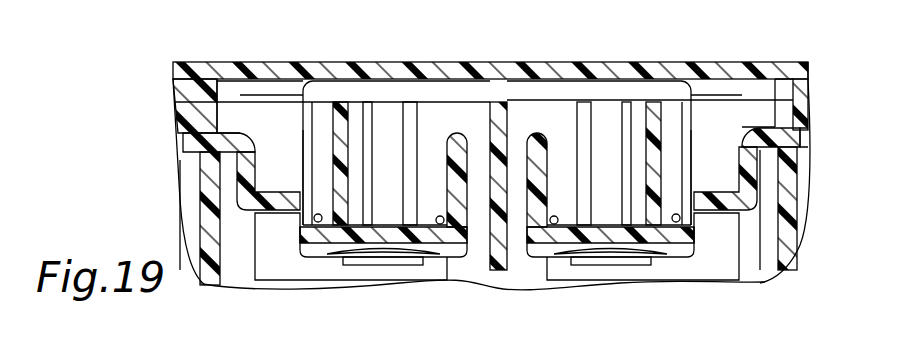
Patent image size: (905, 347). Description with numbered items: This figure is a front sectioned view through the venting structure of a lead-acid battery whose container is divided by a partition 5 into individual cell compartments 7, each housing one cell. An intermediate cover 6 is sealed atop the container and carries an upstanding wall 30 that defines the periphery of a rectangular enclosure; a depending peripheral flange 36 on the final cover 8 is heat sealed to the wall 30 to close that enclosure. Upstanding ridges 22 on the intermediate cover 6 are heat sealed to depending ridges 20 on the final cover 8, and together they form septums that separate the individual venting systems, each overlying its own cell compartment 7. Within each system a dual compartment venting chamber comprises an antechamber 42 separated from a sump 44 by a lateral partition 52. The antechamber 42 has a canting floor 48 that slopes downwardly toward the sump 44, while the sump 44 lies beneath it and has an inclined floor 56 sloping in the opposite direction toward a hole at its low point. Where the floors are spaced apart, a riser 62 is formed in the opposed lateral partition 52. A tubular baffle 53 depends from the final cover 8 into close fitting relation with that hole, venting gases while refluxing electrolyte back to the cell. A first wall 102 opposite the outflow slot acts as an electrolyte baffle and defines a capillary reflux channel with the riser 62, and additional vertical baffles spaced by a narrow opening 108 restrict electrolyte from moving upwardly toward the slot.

The partition 5 is at (208, 203).
The intermediate cover 6 is at (790, 137).
The cell compartment 7 is at (232, 263).
The final cover 8 is at (677, 73).
The depending ridges 20 is at (208, 88).
The upstanding ridges 22 is at (217, 112).
The upstanding wall 30 is at (233, 117).
The depending peripheral flange 36 is at (316, 66).
The antechamber 42 is at (255, 96).
The sump 44 is at (435, 183).
The canting floor 48 is at (260, 203).
The lateral partition 52 is at (305, 157).
The tubular baffle 53 is at (400, 262).
The inclined floor 56 is at (433, 220).
The riser 62 is at (313, 217).
The first wall 102 is at (338, 128).
The narrow opening 108 is at (362, 147).